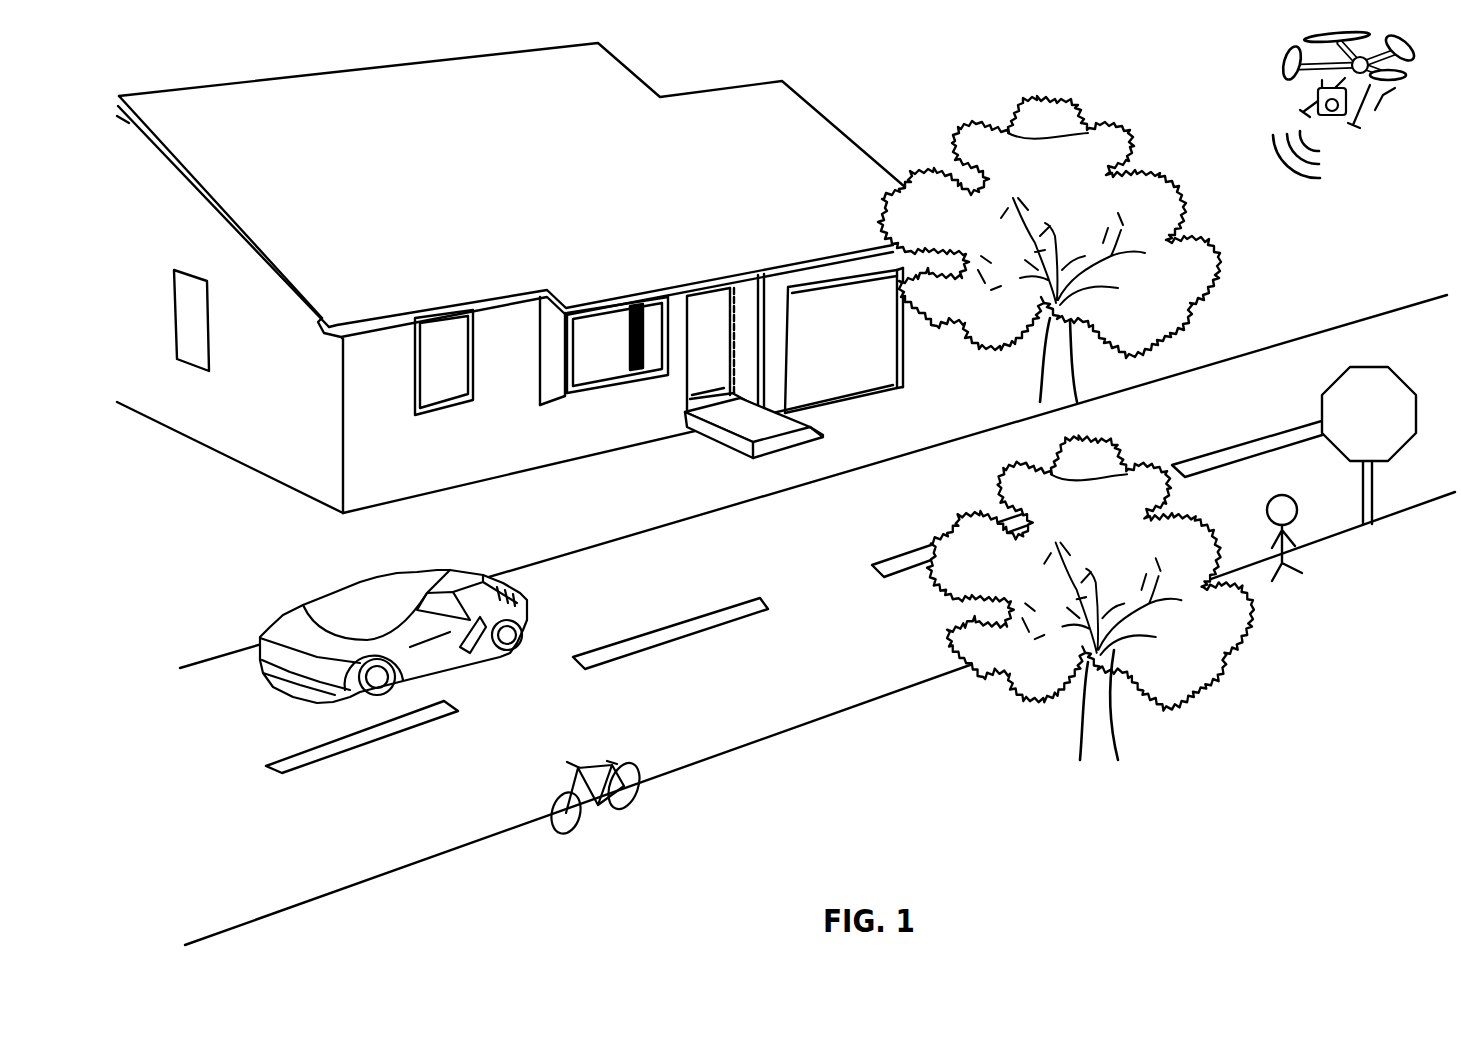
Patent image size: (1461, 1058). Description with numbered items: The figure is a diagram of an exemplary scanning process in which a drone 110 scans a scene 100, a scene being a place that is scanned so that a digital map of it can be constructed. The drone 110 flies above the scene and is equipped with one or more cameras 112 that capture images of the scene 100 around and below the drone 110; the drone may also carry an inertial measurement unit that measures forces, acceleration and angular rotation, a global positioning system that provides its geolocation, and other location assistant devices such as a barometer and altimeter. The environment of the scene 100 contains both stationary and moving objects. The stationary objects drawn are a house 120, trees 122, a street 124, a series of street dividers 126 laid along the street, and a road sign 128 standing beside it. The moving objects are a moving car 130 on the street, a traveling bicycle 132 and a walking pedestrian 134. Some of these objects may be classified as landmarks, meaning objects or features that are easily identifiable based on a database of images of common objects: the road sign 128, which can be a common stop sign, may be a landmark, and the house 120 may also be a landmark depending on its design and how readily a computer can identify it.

The scene 100 is at (1222, 796).
The drone 110 is at (1288, 73).
The camera 112 is at (1331, 118).
The house 120 is at (563, 212).
The trees 122 is at (1222, 285).
The street 124 is at (838, 604).
The street dividers 126 is at (700, 640).
The road sign 128 is at (1331, 378).
The moving car 130 is at (393, 636).
The traveling bicycle 132 is at (632, 801).
The walking pedestrian 134 is at (1300, 573).